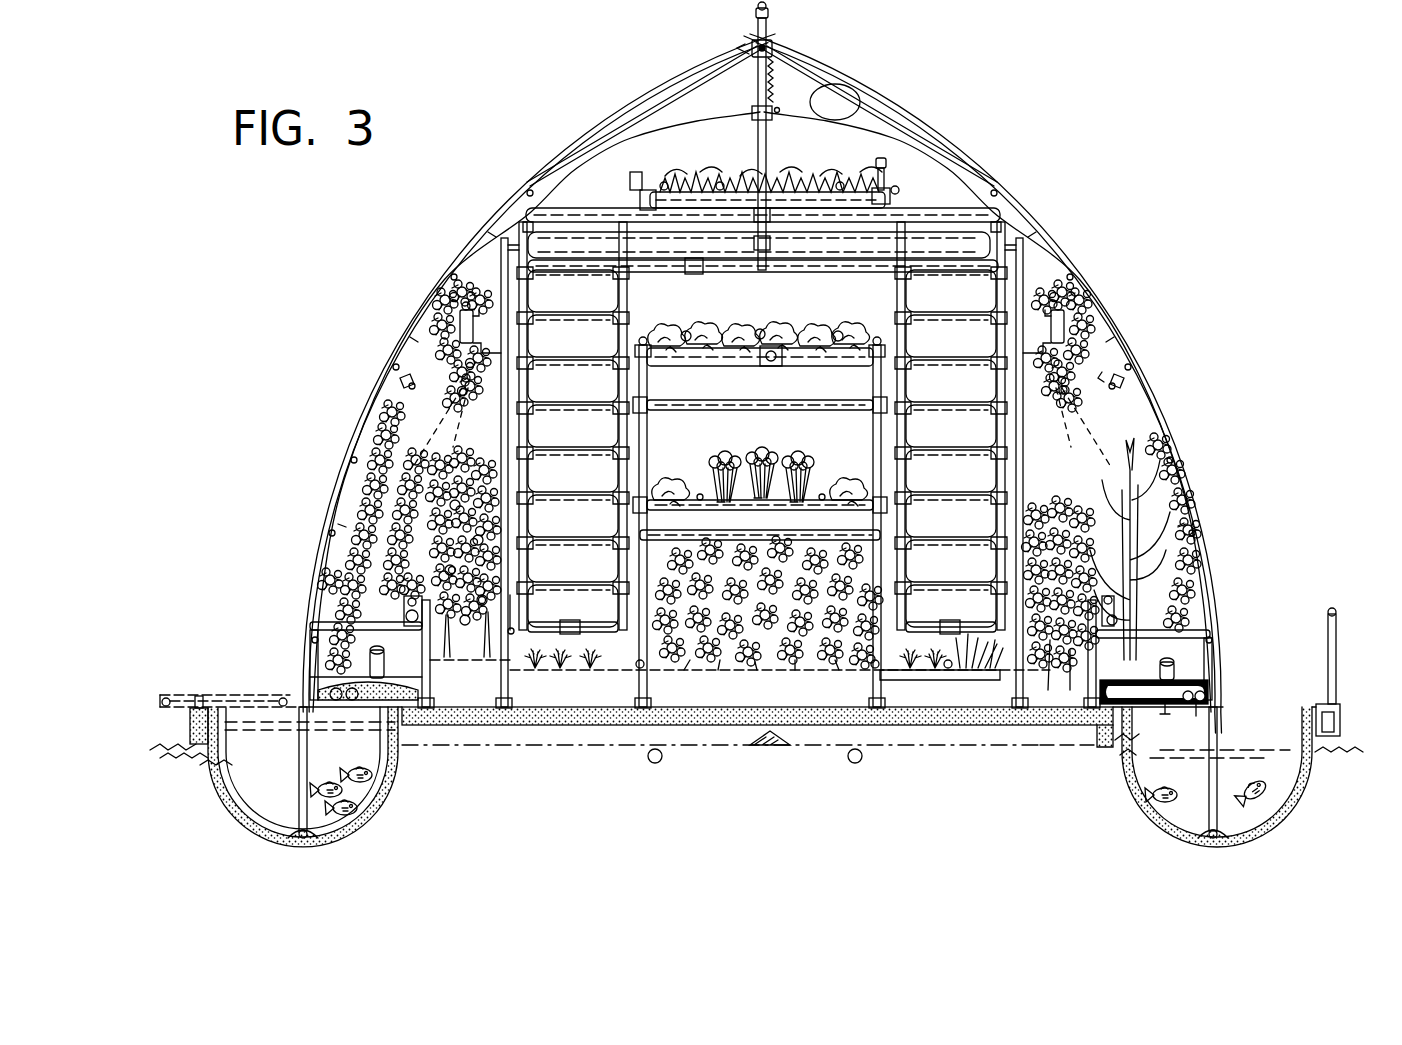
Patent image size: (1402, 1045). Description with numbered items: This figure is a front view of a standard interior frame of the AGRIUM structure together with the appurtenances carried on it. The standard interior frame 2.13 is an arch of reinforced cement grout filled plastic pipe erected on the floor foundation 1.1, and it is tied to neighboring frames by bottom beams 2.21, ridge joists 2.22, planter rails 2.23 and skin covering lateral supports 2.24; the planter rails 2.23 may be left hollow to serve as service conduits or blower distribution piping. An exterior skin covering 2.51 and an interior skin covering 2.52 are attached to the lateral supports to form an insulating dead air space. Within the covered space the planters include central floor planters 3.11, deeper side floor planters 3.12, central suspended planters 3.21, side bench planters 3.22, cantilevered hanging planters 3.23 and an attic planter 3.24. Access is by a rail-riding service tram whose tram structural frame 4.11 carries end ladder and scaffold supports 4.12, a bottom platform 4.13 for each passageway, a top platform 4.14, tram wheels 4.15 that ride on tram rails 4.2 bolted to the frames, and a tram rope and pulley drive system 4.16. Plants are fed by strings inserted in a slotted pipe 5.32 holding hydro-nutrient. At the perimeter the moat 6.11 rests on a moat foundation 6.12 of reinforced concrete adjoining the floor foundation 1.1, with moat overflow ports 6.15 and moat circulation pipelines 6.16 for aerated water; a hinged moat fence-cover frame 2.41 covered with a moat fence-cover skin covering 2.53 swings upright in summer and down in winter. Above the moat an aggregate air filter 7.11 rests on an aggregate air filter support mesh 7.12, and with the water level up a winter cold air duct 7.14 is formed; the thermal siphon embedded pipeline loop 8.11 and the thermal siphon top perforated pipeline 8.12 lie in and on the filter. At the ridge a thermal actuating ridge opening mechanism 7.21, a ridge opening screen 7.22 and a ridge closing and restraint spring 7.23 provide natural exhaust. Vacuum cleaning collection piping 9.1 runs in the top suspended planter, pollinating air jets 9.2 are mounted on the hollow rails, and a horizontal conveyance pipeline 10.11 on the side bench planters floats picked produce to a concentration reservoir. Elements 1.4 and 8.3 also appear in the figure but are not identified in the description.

The floor foundation 1.1 is at (566, 715).
The frame connector 1.4 is at (1105, 374).
The standard interior frame 2.13 is at (1097, 318).
The bottom beams 2.21 is at (296, 826).
The ridge joists 2.22 is at (774, 50).
The planter rails 2.23 is at (899, 190).
The skin covering lateral supports 2.24 is at (1129, 376).
The hinged moat fence-cover frame 2.41 is at (1326, 638).
The exterior skin covering 2.51 is at (918, 118).
The interior skin covering 2.52 is at (942, 150).
The moat fence-cover skin covering 2.53 is at (1334, 649).
The central floor planters 3.11 is at (804, 678).
The deeper side floor planters 3.12 is at (1094, 681).
The central suspended planters 3.21 is at (850, 370).
The side bench planters 3.22 is at (354, 635).
The cantilevered hanging planters 3.23 is at (1022, 343).
The attic planter 3.24 is at (640, 196).
The tram structural frame 4.11 is at (568, 428).
The end ladder and scaffold supports 4.12 is at (602, 510).
The bottom platform 4.13 is at (598, 624).
The top platform 4.14 is at (708, 275).
The tram wheels 4.15 is at (510, 594).
The tram rope and pulley drive system 4.16 is at (521, 460).
The tram rails 4.2 is at (978, 630).
The slotted pipe 5.32 is at (960, 680).
The moat 6.11 is at (371, 792).
The moat foundation 6.12 is at (368, 810).
The moat overflow ports 6.15 is at (190, 721).
The moat circulation pipelines 6.16 is at (864, 764).
The aggregate air filter 7.11 is at (1198, 714).
The aggregate air filter support mesh 7.12 is at (1165, 711).
The winter cold air duct 7.14 is at (368, 722).
The thermal actuating ridge opening mechanism 7.21 is at (828, 106).
The ridge opening screen 7.22 is at (746, 46).
The ridge closing and restraint spring 7.23 is at (758, 97).
The thermal siphon embedded pipeline loop 8.11 is at (1206, 693).
The thermal siphon top perforated pipeline 8.12 is at (1164, 667).
The mast cap 8.3 is at (770, 12).
The vacuum cleaning built-in collection piping 9.1 is at (760, 372).
The pollinating air jets 9.2 is at (876, 160).
The horizontal conveyance pipeline 10.11 is at (406, 618).